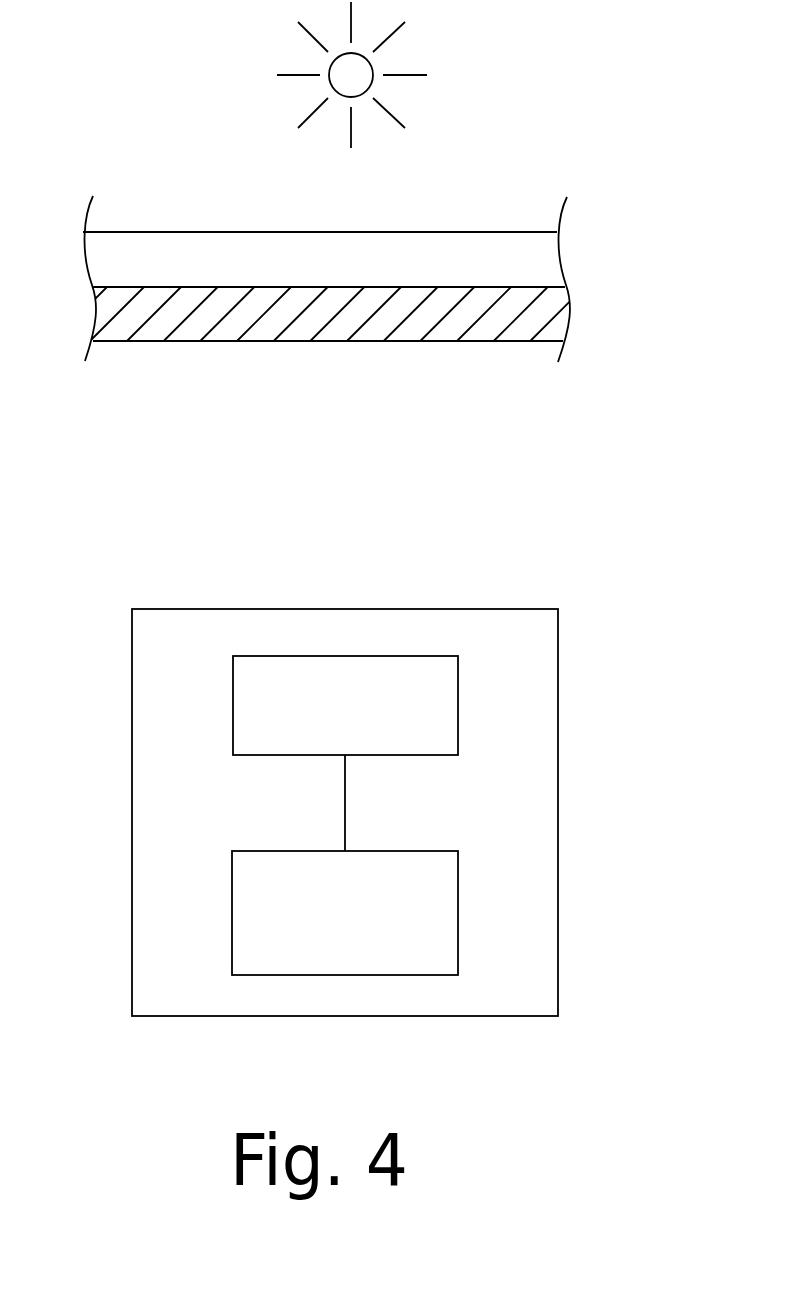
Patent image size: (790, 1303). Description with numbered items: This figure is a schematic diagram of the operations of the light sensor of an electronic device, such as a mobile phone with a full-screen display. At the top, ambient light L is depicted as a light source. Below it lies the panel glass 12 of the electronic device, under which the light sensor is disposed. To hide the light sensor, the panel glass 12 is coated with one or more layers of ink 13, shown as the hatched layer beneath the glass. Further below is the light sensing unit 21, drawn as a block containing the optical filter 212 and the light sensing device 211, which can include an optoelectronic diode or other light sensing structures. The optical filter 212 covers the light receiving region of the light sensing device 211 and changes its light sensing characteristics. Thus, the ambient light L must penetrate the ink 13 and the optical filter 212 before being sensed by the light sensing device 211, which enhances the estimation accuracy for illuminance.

The ambient light L is at (367, 82).
The panel glass 12 is at (500, 232).
The ink 13 is at (500, 341).
The light sensing unit 21 is at (401, 812).
The light sensing device 211 is at (458, 897).
The optical filter 212 is at (458, 703).